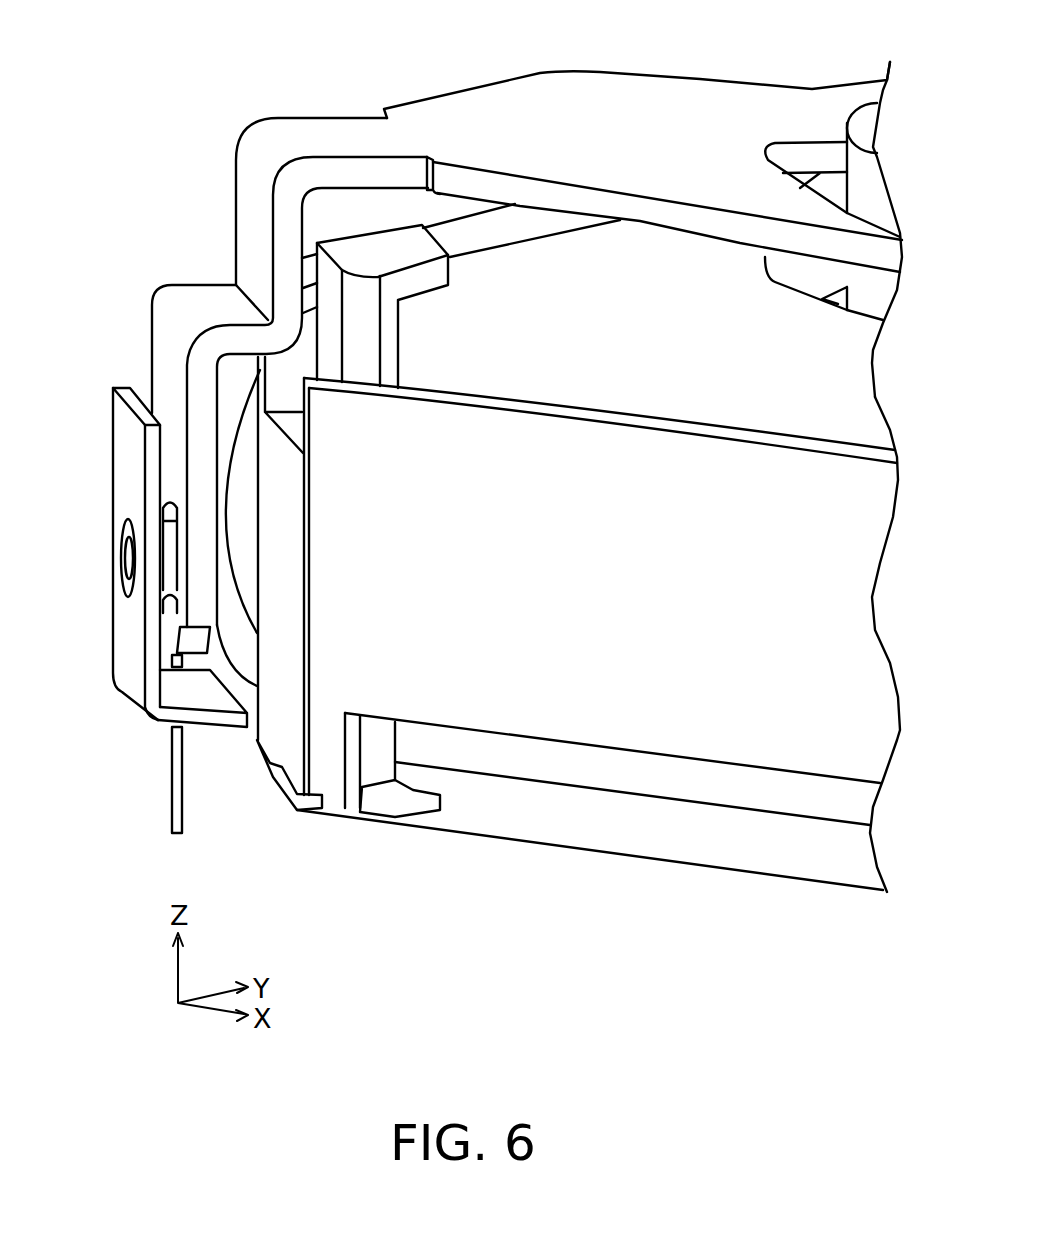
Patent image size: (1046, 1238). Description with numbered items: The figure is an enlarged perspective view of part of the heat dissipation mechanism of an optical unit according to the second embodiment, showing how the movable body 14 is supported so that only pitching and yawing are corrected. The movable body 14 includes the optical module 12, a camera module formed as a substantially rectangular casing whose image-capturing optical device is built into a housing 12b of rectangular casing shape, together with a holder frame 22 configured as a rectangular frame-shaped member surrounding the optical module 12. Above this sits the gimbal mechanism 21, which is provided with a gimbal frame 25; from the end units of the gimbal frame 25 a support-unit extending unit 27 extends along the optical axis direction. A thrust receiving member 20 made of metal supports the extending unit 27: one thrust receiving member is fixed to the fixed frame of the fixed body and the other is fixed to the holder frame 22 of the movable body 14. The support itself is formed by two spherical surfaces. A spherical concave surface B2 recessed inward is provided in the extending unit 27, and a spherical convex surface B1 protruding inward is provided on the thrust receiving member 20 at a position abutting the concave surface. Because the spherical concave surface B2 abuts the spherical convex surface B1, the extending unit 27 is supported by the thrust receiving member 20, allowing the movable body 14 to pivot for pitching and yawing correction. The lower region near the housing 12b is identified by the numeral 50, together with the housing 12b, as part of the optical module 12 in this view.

The gimbal mechanism 21 is at (720, 78).
The gimbal frame 25 is at (572, 120).
The support-unit extending unit 27 is at (169, 313).
The spherical convex surface B1 is at (169, 548).
The spherical concave surface B2 is at (246, 588).
The thrust receiving member 20 is at (138, 687).
The holder frame 22 is at (452, 598).
The movable body 14 is at (770, 662).
The optical module 12 is at (660, 915).
The housing 12b is at (665, 778).
The lower flange 50 is at (548, 803).